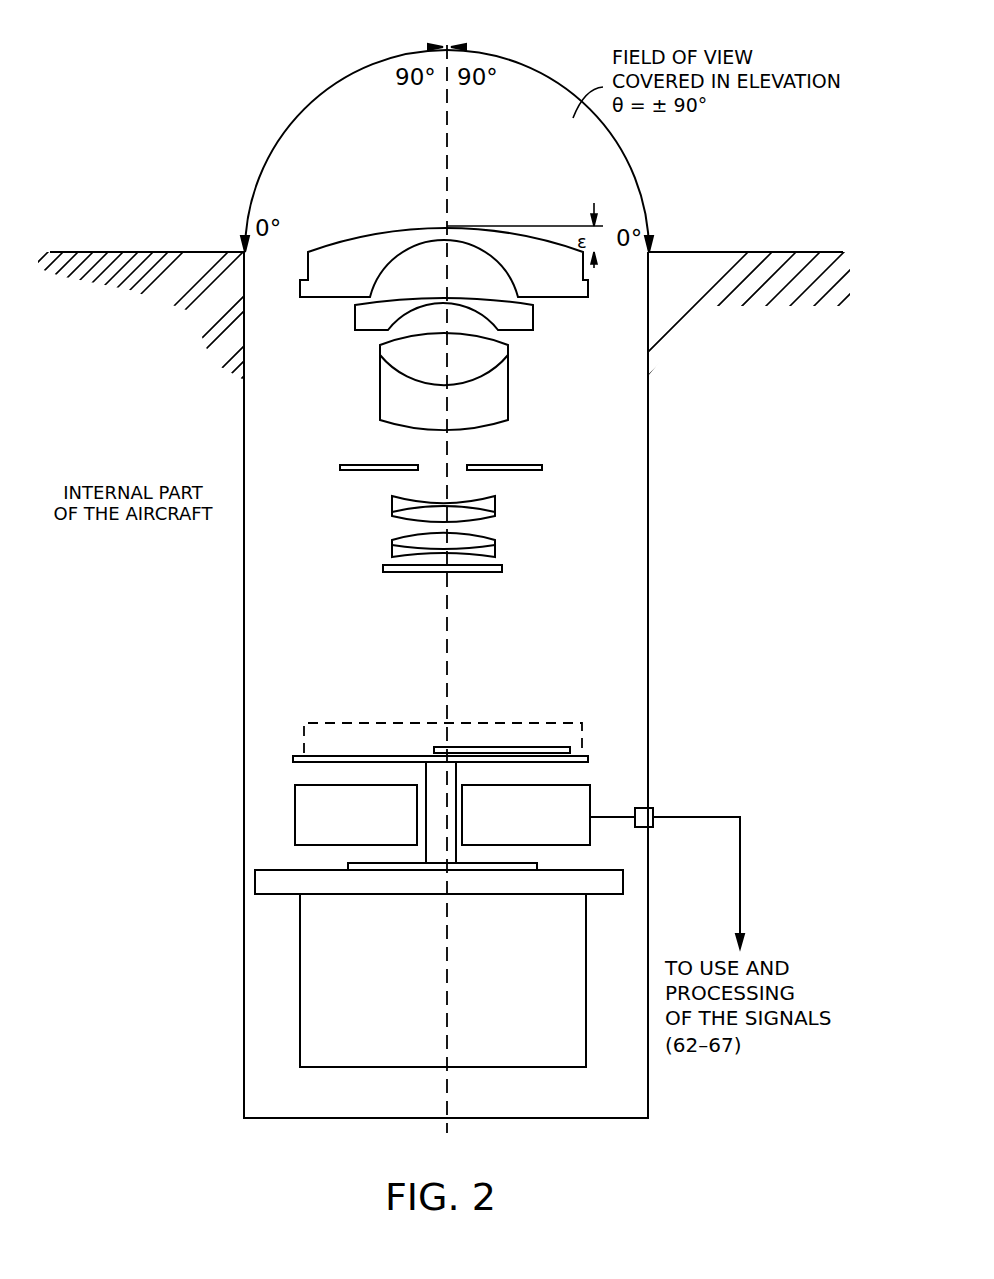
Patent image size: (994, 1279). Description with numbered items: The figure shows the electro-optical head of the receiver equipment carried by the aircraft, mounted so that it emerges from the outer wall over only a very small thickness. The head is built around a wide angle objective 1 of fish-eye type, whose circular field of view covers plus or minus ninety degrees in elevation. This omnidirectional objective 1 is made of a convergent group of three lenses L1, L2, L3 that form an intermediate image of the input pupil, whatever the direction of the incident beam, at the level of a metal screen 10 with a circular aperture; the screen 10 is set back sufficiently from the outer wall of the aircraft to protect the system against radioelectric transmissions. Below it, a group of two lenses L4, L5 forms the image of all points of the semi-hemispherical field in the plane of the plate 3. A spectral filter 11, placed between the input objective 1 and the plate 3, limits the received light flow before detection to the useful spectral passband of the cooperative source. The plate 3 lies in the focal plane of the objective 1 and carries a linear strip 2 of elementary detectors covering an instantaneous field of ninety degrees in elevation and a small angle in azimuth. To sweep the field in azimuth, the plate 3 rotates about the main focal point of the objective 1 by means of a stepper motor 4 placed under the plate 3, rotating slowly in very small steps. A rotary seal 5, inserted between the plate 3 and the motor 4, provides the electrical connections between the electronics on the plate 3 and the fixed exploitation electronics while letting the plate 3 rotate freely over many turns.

The wide angle objective 1 is at (695, 573).
The first lens L1 is at (567, 282).
The second lens L2 is at (530, 320).
The third lens L3 is at (500, 400).
The metal screen 10 is at (538, 463).
The fourth lens L4 is at (495, 505).
The fifth lens L5 is at (495, 545).
The spectral filter 11 is at (485, 573).
The linear strip 2 is at (515, 727).
The plate 3 is at (588, 758).
The stepper motor 4 is at (586, 1005).
The rotary seal 5 is at (587, 805).